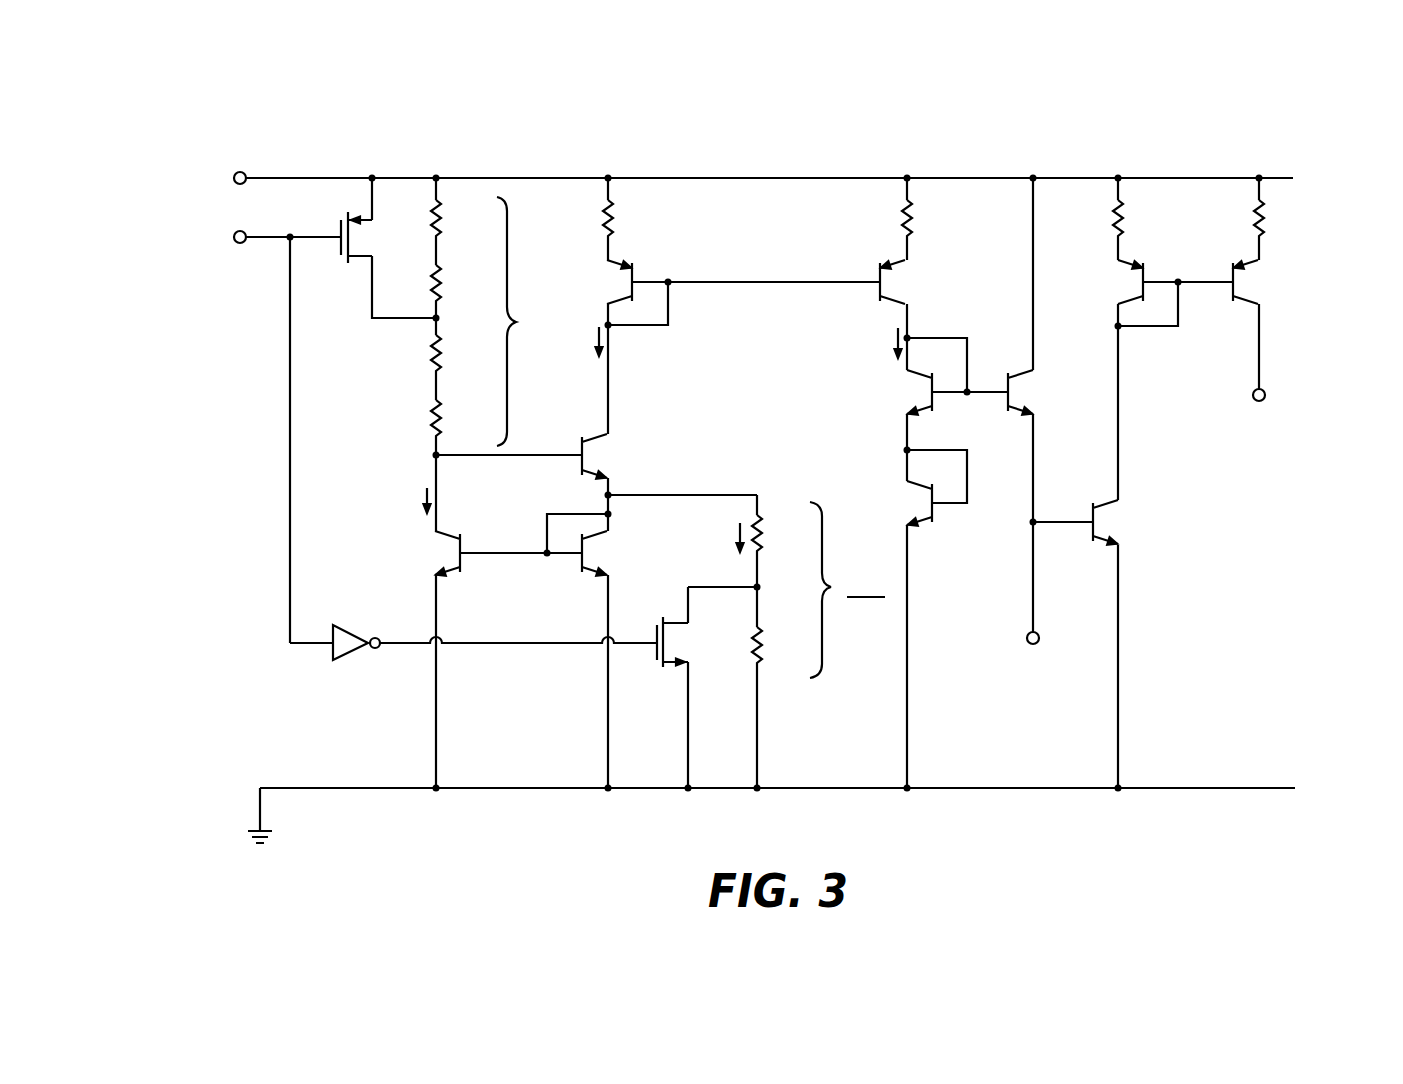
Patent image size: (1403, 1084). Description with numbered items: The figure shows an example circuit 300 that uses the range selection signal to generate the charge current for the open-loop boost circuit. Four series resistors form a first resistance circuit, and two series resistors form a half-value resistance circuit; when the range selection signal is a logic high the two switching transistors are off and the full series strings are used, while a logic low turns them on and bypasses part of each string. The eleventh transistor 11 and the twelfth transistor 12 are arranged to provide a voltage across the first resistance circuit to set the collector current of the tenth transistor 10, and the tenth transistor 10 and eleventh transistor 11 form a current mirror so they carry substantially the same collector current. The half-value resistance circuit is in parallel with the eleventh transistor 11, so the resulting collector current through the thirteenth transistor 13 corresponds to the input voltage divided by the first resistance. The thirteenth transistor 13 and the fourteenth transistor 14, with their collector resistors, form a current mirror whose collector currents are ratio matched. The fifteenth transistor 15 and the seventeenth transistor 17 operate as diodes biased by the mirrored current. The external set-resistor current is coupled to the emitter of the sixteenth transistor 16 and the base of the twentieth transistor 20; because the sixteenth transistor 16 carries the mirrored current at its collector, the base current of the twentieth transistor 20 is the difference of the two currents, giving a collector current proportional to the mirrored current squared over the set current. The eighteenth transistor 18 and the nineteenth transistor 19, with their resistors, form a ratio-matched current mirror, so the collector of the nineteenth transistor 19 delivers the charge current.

The charge current generation circuit 300 is at (797, 475).
The transistor Q10 10 is at (428, 553).
The transistor Q11 11 is at (615, 553).
The transistor Q12 12 is at (615, 456).
The transistor Q13 13 is at (604, 282).
The transistor Q14 14 is at (916, 282).
The transistor Q15 15 is at (904, 391).
The transistor Q16 16 is at (1044, 392).
The transistor Q17 17 is at (904, 500).
The transistor Q18 18 is at (1115, 282).
The transistor Q19 19 is at (1269, 283).
The transistor Q20 20 is at (1130, 522).